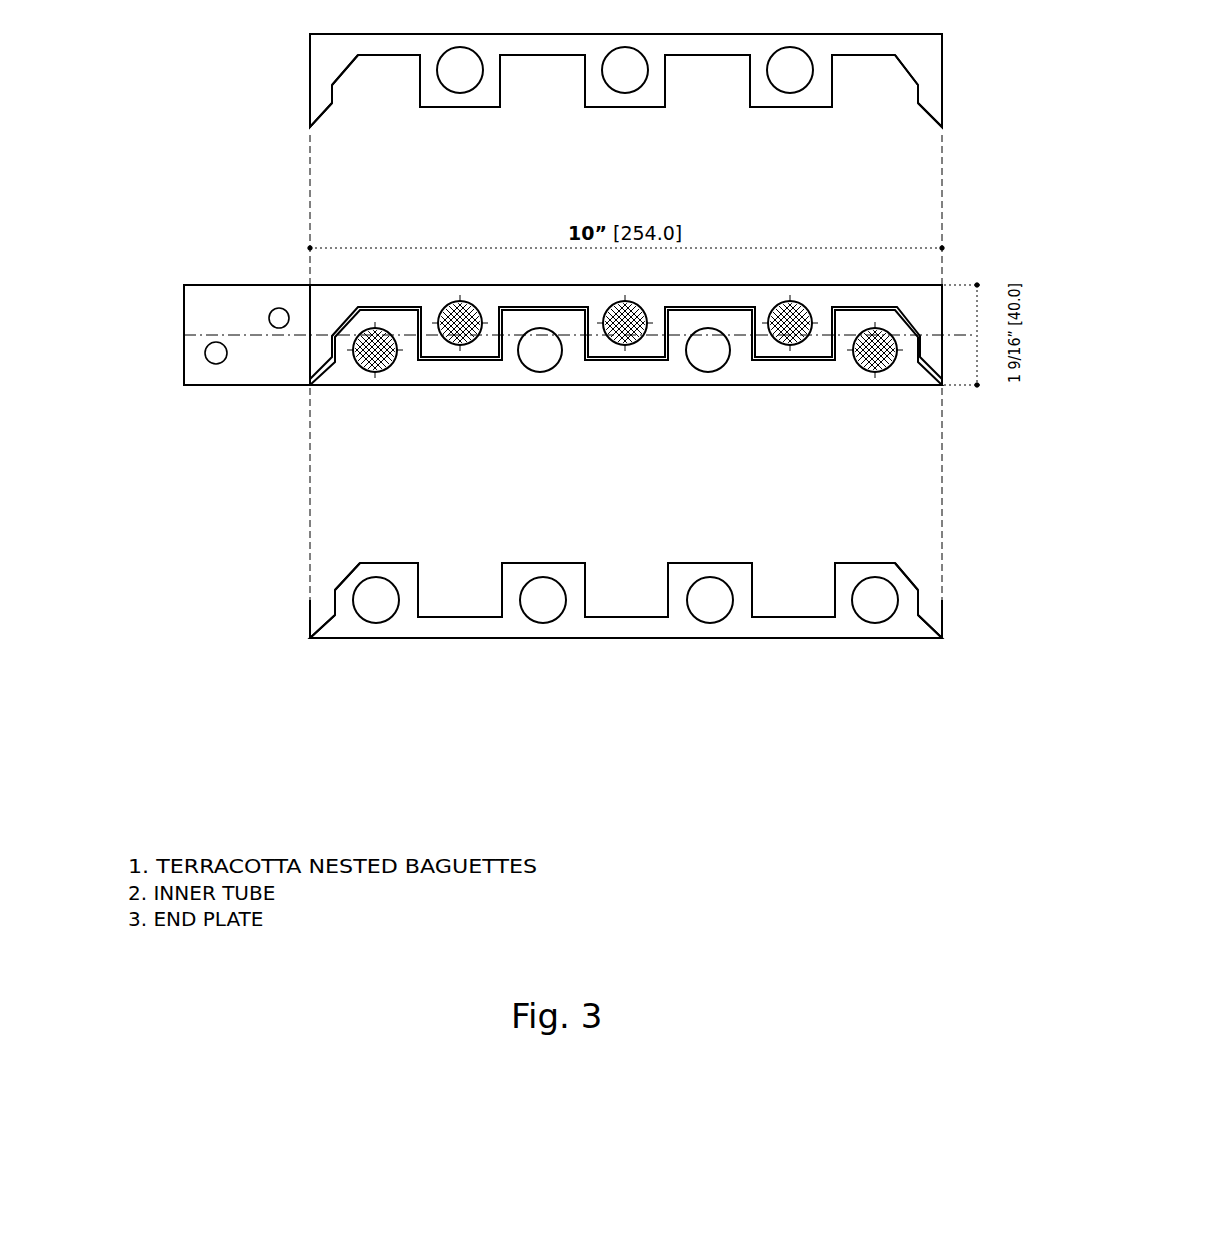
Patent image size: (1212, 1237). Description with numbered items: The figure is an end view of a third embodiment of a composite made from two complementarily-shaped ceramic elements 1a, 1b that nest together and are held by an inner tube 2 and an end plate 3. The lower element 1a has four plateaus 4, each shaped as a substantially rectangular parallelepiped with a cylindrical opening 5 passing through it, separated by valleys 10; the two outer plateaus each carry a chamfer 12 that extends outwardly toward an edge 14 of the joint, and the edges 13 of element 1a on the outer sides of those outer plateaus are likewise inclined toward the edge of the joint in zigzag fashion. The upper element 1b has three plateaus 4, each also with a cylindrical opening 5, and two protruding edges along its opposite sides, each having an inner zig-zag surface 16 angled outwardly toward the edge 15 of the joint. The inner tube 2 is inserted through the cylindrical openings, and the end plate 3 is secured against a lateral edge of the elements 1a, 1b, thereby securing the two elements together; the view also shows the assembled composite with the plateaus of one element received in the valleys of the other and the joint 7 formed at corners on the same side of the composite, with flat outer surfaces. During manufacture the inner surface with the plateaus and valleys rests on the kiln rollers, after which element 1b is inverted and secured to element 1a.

The ceramic element 1a is at (310, 623).
The ceramic element 1b is at (310, 67).
The inner tube 2 is at (310, 353).
The end plate 3 is at (184, 305).
The plateau 4 is at (865, 563).
The cylindrical opening 5 is at (852, 660).
The joint 7 is at (962, 426).
The valley 10 is at (787, 609).
The chamfer 12 is at (896, 570).
The edge 13 is at (958, 583).
The edge of the joint 14 is at (942, 692).
The edge of the joint 15 is at (960, 123).
The inner zig-zag surface 16 is at (893, 138).